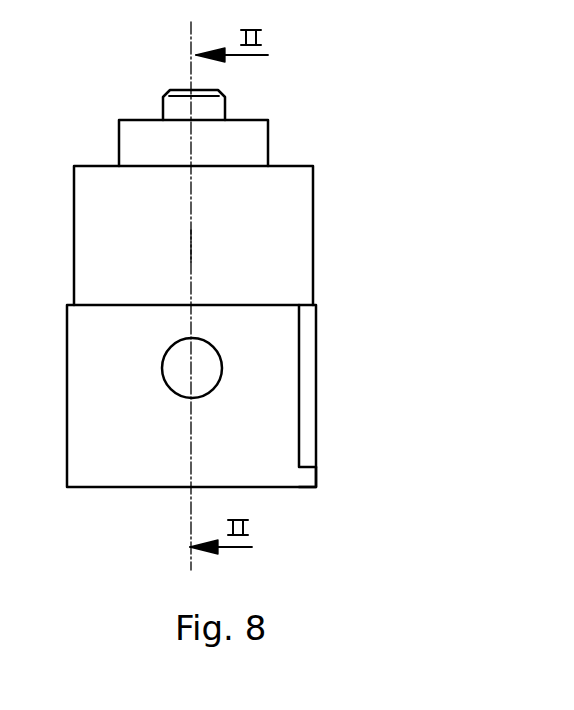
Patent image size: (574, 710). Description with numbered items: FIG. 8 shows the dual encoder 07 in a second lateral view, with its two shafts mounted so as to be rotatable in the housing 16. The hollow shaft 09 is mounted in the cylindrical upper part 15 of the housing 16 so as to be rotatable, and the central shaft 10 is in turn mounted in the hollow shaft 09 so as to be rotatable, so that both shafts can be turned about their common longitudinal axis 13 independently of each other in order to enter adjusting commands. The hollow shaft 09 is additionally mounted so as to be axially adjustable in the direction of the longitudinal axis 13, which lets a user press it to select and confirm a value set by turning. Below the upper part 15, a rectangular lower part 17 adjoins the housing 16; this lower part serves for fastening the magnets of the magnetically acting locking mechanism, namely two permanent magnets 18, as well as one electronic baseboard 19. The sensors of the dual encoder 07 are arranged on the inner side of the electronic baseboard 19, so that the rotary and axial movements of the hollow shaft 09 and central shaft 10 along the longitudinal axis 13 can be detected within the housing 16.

The dual encoder 07 is at (393, 108).
The hollow shaft 09 is at (257, 145).
The central shaft 10 is at (218, 107).
The longitudinal axis 13 is at (192, 247).
The cylindrical upper part 15 is at (297, 222).
The housing 16 is at (356, 266).
The rectangular lower part 17 is at (303, 477).
The permanent magnets 18 is at (208, 380).
The electronic baseboard 19 is at (305, 395).